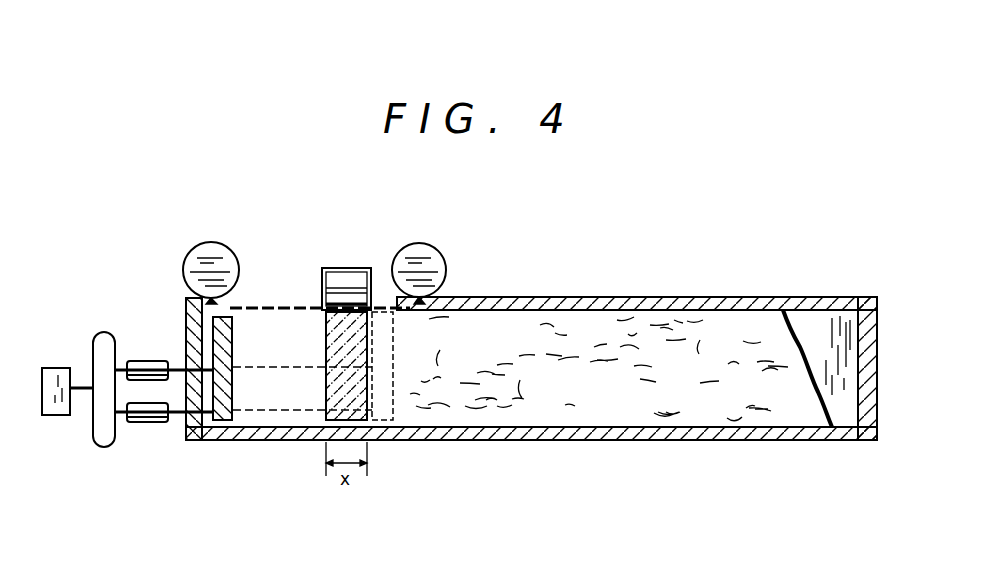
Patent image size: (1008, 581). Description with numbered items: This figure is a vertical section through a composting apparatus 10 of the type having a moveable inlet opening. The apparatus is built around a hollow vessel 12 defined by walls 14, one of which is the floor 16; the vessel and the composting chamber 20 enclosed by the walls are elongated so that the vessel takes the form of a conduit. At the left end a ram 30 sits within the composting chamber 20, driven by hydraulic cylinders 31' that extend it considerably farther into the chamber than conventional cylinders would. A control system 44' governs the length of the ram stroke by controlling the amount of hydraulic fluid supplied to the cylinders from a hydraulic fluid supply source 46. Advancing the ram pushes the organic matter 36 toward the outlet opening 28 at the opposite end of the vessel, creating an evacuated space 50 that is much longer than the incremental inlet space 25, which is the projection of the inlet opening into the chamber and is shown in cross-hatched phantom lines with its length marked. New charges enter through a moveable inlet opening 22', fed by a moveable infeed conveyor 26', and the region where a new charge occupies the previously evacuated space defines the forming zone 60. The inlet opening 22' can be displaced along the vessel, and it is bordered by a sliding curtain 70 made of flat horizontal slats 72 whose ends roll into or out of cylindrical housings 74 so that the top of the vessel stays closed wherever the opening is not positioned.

The composting apparatus 10 is at (702, 297).
The hollow vessel 12 is at (776, 297).
The walls 14 is at (577, 297).
The floor 16 is at (647, 441).
The composting chamber 20 is at (362, 418).
The moveable inlet opening 22' is at (298, 366).
The incremental inlet space 25 is at (325, 410).
The moveable infeed conveyor 26' is at (358, 239).
The outlet opening 28 is at (848, 441).
The ram 30 is at (223, 421).
The hydraulic cylinders 31' is at (150, 422).
The organic matter 36 is at (594, 366).
The control system 44' is at (61, 422).
The hydraulic fluid supply source 46 is at (97, 347).
The evacuated space 50 is at (267, 427).
The forming zone 60 is at (396, 327).
The sliding curtain 70 is at (307, 307).
The flat horizontal slats 72 is at (270, 305).
The cylindrical housings 74 is at (192, 262).